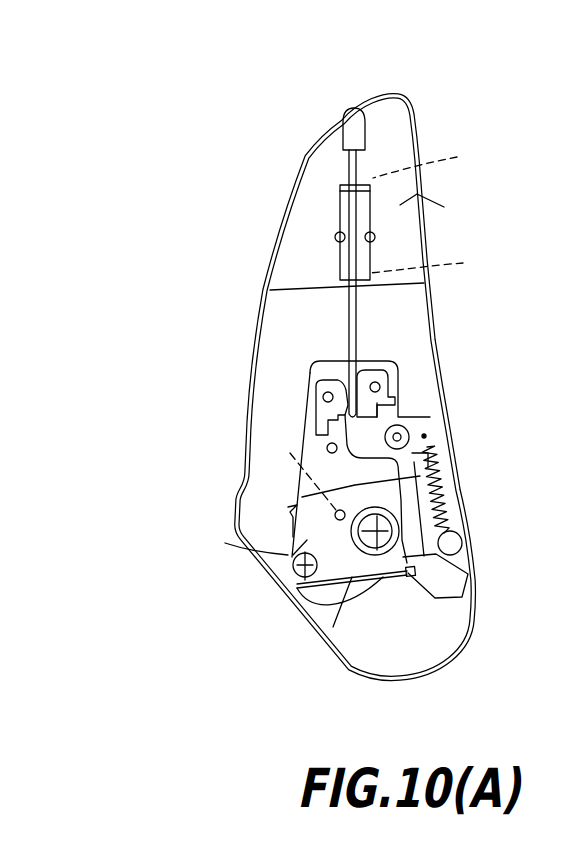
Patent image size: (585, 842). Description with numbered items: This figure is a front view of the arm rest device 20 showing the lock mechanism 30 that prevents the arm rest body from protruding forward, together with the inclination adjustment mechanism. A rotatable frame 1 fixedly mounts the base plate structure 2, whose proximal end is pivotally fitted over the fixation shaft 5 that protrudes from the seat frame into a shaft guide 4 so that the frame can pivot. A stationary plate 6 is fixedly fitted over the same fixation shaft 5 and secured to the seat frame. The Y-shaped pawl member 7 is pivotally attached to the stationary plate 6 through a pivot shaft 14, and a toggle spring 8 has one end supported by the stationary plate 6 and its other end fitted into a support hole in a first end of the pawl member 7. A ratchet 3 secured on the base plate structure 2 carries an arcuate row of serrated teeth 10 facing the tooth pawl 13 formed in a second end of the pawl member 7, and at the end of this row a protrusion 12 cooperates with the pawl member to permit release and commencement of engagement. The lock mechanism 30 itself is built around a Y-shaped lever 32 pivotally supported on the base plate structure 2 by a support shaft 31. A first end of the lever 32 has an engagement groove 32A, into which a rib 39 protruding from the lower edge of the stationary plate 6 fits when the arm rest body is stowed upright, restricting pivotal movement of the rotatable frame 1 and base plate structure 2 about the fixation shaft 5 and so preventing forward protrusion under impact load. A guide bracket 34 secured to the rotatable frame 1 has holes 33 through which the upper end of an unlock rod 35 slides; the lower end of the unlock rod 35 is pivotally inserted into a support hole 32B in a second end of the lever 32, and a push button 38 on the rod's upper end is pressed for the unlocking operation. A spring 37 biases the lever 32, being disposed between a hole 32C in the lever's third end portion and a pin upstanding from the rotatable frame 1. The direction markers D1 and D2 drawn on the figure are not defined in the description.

The rotatable frame 1 is at (434, 189).
The base plate structure 2 is at (395, 381).
The ratchet 3 is at (368, 382).
The shaft guide 4 is at (378, 545).
The fixation shaft 5 is at (352, 535).
The stationary plate 6 is at (293, 556).
The pawl member 7 is at (292, 538).
The toggle spring 8 is at (338, 489).
The row of serrated teeth 10 is at (350, 392).
The protrusion 12 is at (322, 432).
The tooth pawl 13 is at (288, 507).
The pivot shaft 14 is at (295, 583).
The arm rest device 20 is at (443, 141).
The lock mechanism 30 is at (239, 237).
The support shaft 31 is at (399, 436).
The Y-shaped lever 32 is at (423, 482).
The engagement groove 32A is at (468, 573).
The support hole 32B is at (380, 400).
The spring pin 32C is at (427, 437).
The holes 33 is at (435, 207).
The guide bracket 34 is at (372, 250).
The unlock rod 35 is at (365, 316).
The spring 37 is at (448, 498).
The push button 38 is at (342, 120).
The rib 39 is at (400, 557).
The direction D1 is at (413, 583).
The direction D2 is at (300, 610).